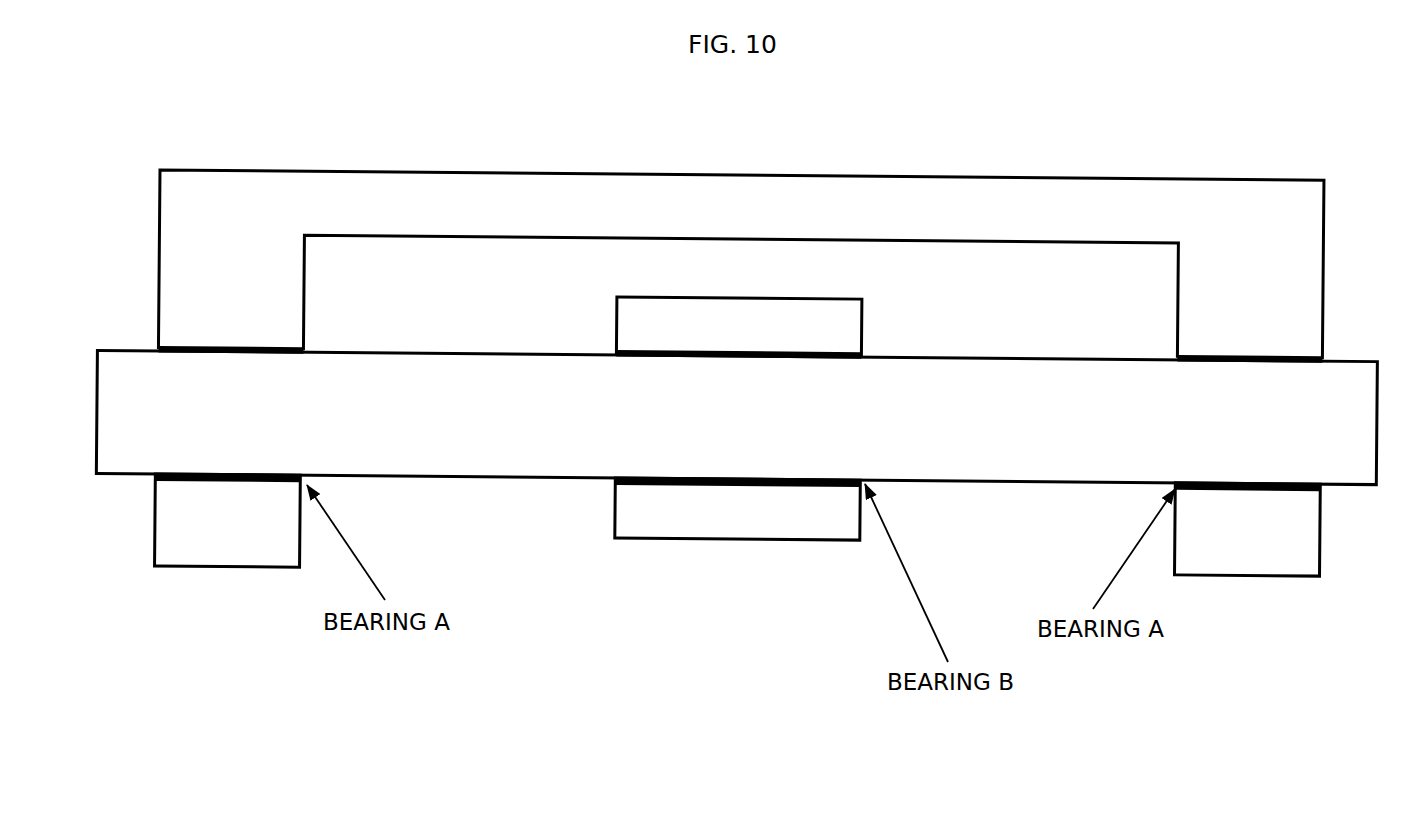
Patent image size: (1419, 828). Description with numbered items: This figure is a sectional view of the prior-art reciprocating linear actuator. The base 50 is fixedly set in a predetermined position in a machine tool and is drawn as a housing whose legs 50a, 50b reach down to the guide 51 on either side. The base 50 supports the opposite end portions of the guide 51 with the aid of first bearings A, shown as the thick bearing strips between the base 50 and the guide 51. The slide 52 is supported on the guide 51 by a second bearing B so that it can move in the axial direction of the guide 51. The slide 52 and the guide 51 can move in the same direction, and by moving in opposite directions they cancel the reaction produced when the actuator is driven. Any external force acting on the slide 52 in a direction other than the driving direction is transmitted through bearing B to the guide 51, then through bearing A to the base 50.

The base 50 is at (747, 200).
The first bearing holder 50a is at (190, 540).
The second bearing holder 50b is at (1238, 558).
The guide 51 is at (502, 455).
The slide 52 is at (743, 526).